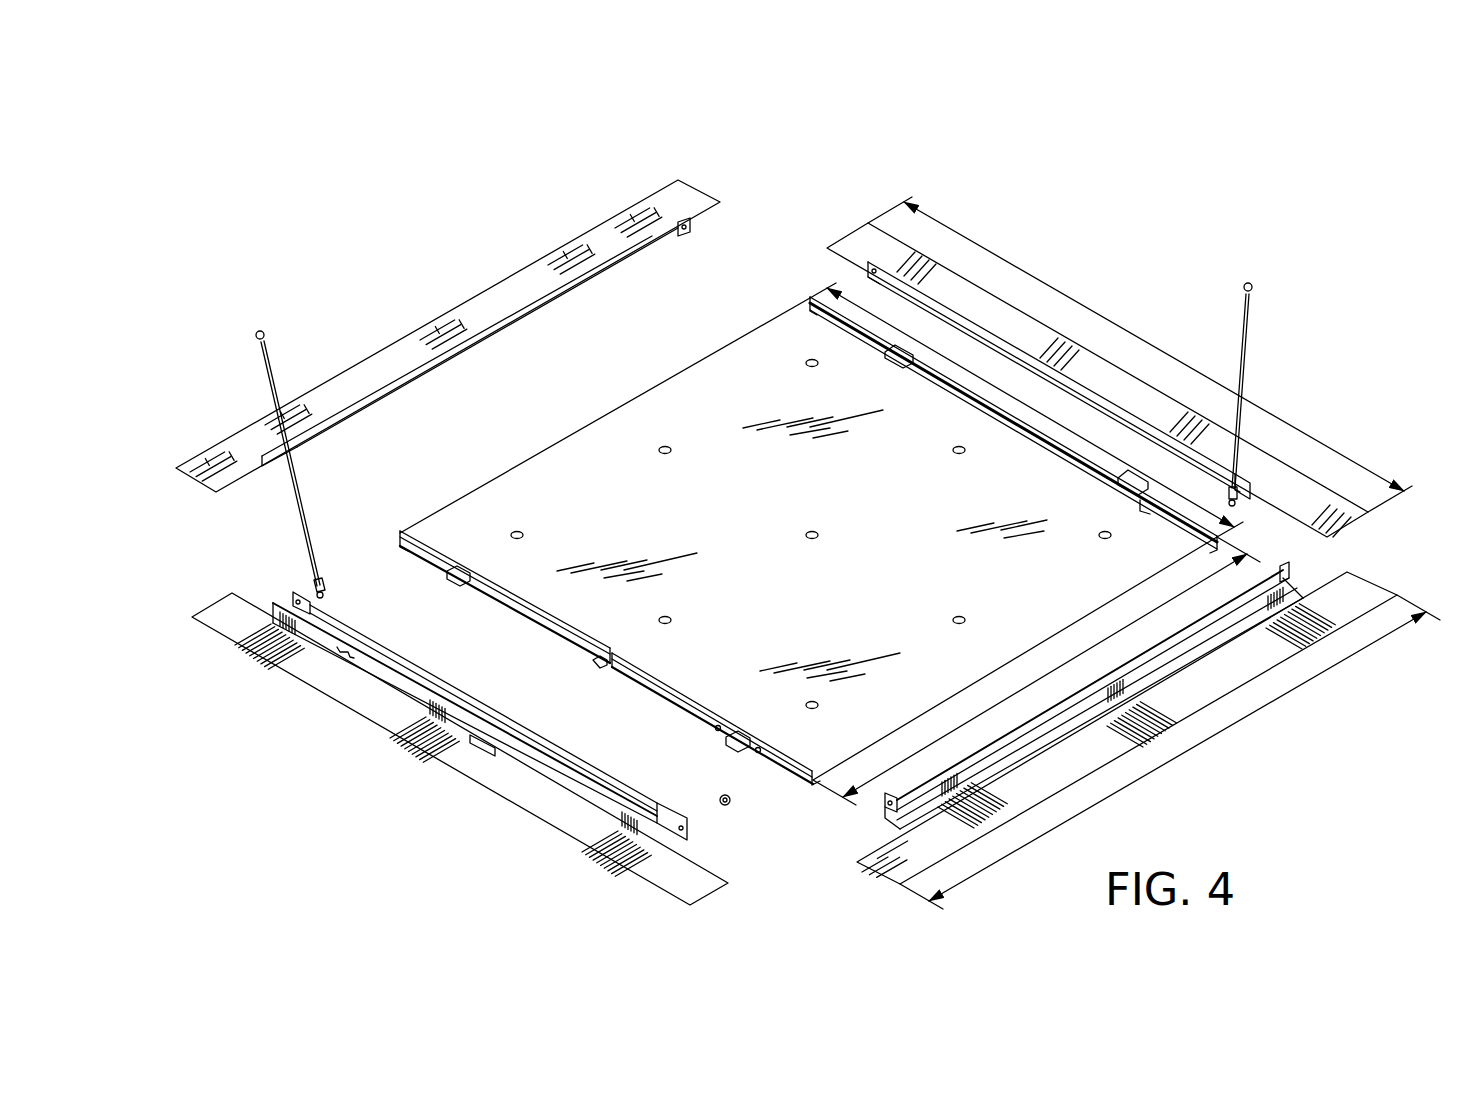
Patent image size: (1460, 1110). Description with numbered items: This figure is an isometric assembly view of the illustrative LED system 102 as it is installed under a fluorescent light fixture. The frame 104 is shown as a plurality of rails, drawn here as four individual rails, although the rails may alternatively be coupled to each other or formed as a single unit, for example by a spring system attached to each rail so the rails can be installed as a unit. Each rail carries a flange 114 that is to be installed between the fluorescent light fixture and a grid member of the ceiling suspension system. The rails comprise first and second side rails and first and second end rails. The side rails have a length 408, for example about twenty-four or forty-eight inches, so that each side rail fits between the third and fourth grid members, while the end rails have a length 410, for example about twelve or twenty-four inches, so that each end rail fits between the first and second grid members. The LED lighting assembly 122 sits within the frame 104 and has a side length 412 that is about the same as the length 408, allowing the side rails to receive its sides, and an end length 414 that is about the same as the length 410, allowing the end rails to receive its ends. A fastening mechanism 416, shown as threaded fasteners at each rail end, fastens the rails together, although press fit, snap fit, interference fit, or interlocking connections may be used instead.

The LED system 102 is at (272, 194).
The frame 104 is at (440, 296).
The flange 114 is at (680, 193).
The LED lighting assembly 122 is at (585, 406).
The length 408 is at (1140, 354).
The length 410 is at (1170, 752).
The side length 412 is at (1026, 410).
The end length 414 is at (1036, 671).
The fastening mechanism 416 is at (687, 250).